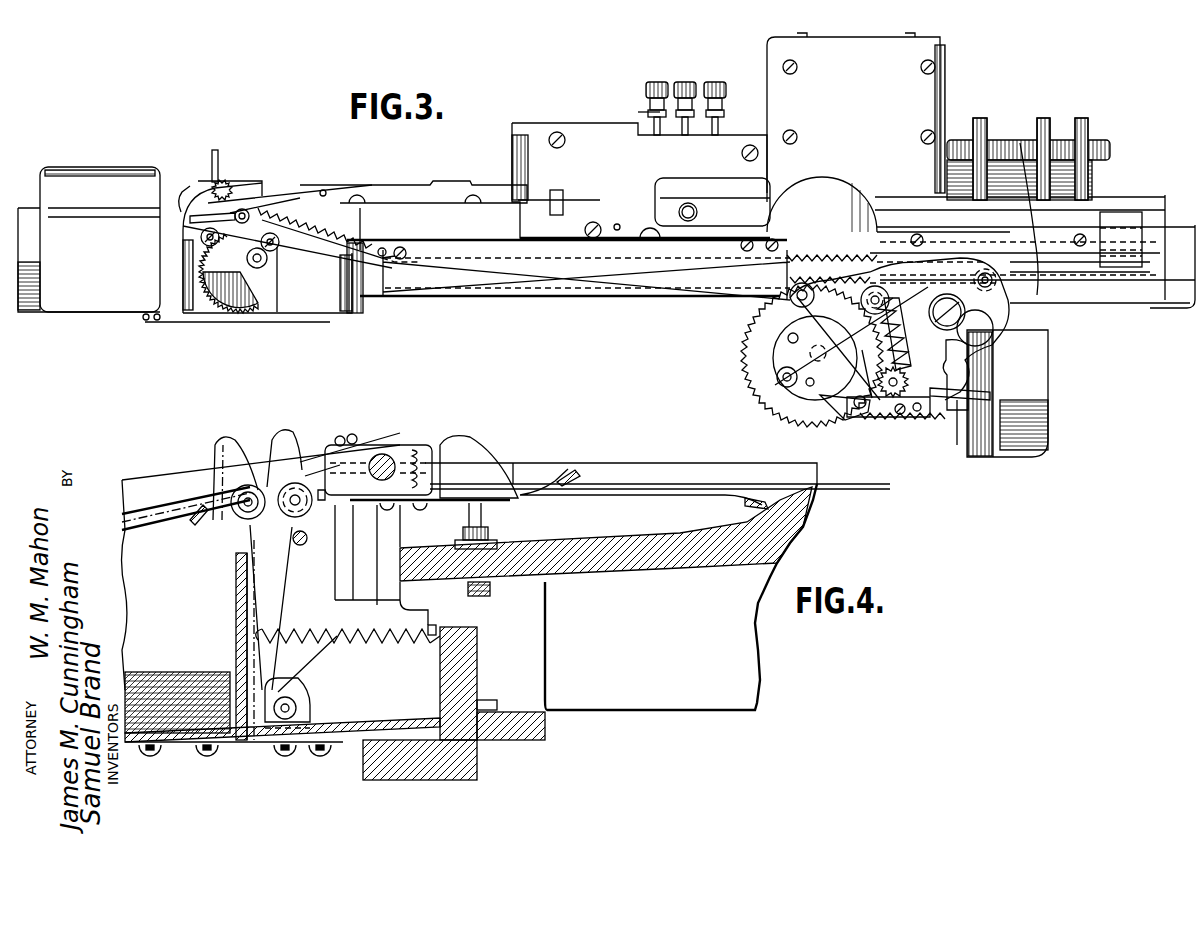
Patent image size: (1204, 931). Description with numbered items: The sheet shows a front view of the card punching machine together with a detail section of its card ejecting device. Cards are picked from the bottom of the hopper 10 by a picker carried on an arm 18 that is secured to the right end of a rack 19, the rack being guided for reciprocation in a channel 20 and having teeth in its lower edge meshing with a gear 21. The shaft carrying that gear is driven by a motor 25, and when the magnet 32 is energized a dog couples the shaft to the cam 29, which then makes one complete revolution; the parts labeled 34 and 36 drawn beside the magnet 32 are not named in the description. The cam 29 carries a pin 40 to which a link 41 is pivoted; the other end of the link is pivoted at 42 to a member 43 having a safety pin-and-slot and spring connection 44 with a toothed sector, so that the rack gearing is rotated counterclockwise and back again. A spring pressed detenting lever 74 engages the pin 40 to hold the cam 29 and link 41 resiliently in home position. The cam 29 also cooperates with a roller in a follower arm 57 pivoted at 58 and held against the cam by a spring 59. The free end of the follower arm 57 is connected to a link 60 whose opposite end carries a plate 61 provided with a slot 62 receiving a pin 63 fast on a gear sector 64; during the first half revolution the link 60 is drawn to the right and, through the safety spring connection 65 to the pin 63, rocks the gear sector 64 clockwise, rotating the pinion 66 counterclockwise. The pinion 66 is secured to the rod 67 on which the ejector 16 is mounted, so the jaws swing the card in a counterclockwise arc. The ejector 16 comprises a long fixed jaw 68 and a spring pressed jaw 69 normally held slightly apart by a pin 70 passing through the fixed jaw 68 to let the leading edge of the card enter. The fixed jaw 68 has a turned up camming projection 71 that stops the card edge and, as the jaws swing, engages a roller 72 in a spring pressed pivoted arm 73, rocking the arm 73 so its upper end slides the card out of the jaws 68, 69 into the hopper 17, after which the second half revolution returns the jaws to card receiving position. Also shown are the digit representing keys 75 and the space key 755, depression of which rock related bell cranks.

In FIG. 3, the hopper 10 is at (1055, 165).
In FIG. 4, the ejector 16 is at (150, 497).
In FIG. 4, the hopper 17 is at (200, 675).
In FIG. 3, the arm 18 is at (1118, 237).
In FIG. 3, the rack 19 is at (1080, 268).
In FIG. 3, the channel 20 is at (1040, 286).
In FIG. 3, the gear 21 is at (752, 342).
In FIG. 3, the motor 25 is at (1030, 432).
In FIG. 3, the cam 29 is at (780, 352).
In FIG. 3, the magnet 32 is at (907, 340).
In FIG. 3, the rod 34 is at (952, 420).
In FIG. 3, the bracket 36 is at (975, 393).
In FIG. 3, the pin 40 is at (777, 388).
In FIG. 3, the link 41 is at (840, 310).
In FIG. 3, the pivot 42 is at (870, 278).
In FIG. 3, the member 43 is at (962, 268).
In FIG. 3, the safety pin-and-slot and spring connection 44 is at (988, 276).
In FIG. 3, the follower arm 57 is at (866, 356).
In FIG. 3, the pivot 58 is at (862, 406).
In FIG. 3, the spring 59 is at (915, 388).
In FIG. 3, the link 60 is at (622, 288).
In FIG. 3, the plate 61 is at (190, 225).
In FIG. 3, the slot 62 is at (190, 192).
In FIG. 3, the pin 63 is at (245, 215).
In FIG. 3, the gear sector 64 is at (246, 283).
In FIG. 3, the safety spring connection 65 is at (318, 215).
In FIG. 3, the pinion 66 is at (226, 196).
In FIG. 3, the rod 67 is at (213, 183).
In FIG. 4, the rod 67 is at (382, 455).
In FIG. 4, the fixed jaw 68 is at (208, 505).
In FIG. 4, the spring pressed jaw 69 is at (207, 517).
In FIG. 4, the pin 70 is at (487, 512).
In FIG. 4, the camming projection 71 is at (300, 455).
In FIG. 4, the roller 72 is at (301, 546).
In FIG. 4, the arm 73 is at (283, 587).
In FIG. 3, the detenting lever 74 is at (835, 402).
In FIG. 3, the keys 75 is at (715, 84).
In FIG. 3, the plate 755 is at (645, 109).